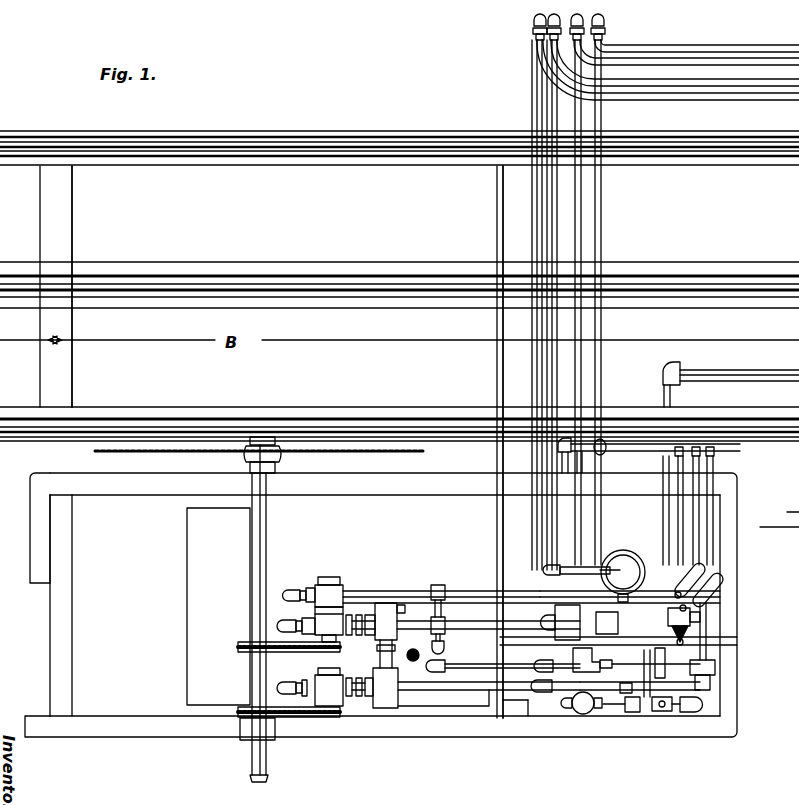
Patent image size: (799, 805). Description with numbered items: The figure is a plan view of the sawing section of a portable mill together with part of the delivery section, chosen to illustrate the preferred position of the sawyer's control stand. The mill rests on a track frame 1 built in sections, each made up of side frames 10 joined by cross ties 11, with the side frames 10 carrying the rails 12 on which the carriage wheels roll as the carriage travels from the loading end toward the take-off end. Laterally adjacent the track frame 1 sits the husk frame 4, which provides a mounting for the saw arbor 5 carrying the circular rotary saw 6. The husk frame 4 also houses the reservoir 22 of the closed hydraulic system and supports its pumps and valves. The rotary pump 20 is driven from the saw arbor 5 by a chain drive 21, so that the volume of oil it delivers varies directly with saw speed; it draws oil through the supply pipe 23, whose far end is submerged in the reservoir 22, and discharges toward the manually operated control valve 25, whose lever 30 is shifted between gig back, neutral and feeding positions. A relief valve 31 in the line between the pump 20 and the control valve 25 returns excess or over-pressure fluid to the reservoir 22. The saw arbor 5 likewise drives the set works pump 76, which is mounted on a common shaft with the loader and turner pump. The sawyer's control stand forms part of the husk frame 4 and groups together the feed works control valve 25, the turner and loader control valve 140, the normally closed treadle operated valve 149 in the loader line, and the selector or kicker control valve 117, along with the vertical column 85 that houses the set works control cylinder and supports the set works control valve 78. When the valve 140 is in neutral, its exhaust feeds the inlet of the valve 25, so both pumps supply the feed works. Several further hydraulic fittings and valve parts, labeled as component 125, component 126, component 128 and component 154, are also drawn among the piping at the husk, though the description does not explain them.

The track frame 1 is at (161, 393).
The husk frame 4 is at (63, 529).
The saw arbor 5 is at (268, 533).
The circular rotary saw 6 is at (100, 452).
The side frames 10 is at (182, 164).
The cross ties 11 is at (72, 227).
The rails 12 is at (336, 150).
The rotary pump 20 is at (340, 695).
The chain drive 21 is at (306, 720).
The reservoir 22 is at (188, 580).
The supply pipe 23 is at (280, 688).
The control valve 25 is at (704, 625).
The lever 30 is at (690, 642).
The relief valve 31 is at (386, 695).
The set works pump 76 is at (332, 593).
The control valve 78 is at (641, 592).
The vertical column 85 is at (607, 552).
The selector or kicker control valve 117 is at (722, 601).
The valve 125 is at (312, 624).
The worm gear 126 is at (262, 630).
The valve 128 is at (385, 620).
The turner and loader control valve 140 is at (571, 662).
The treadle operated valve 149 is at (653, 717).
The pump 154 is at (586, 714).